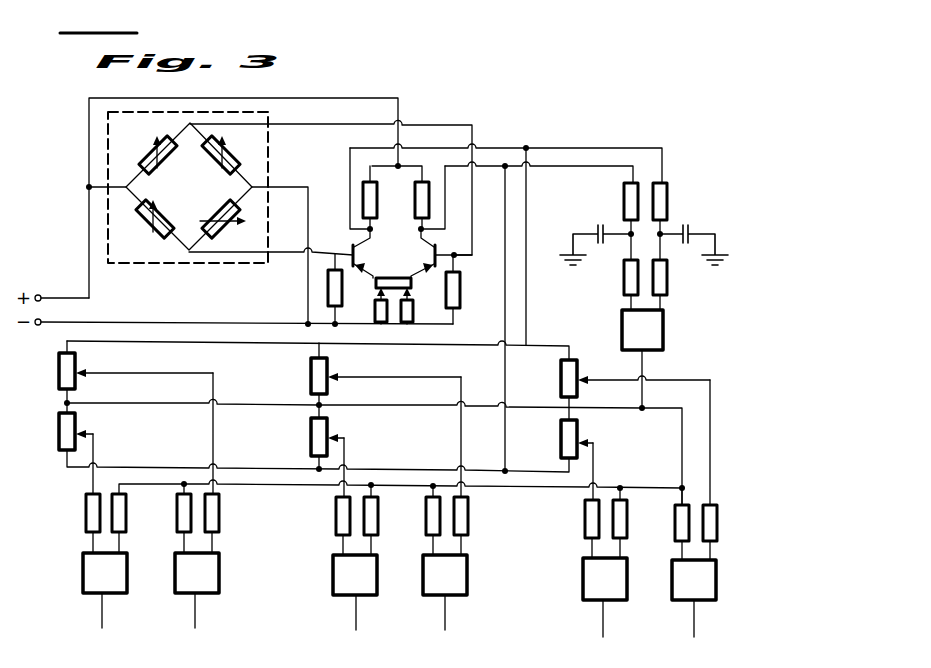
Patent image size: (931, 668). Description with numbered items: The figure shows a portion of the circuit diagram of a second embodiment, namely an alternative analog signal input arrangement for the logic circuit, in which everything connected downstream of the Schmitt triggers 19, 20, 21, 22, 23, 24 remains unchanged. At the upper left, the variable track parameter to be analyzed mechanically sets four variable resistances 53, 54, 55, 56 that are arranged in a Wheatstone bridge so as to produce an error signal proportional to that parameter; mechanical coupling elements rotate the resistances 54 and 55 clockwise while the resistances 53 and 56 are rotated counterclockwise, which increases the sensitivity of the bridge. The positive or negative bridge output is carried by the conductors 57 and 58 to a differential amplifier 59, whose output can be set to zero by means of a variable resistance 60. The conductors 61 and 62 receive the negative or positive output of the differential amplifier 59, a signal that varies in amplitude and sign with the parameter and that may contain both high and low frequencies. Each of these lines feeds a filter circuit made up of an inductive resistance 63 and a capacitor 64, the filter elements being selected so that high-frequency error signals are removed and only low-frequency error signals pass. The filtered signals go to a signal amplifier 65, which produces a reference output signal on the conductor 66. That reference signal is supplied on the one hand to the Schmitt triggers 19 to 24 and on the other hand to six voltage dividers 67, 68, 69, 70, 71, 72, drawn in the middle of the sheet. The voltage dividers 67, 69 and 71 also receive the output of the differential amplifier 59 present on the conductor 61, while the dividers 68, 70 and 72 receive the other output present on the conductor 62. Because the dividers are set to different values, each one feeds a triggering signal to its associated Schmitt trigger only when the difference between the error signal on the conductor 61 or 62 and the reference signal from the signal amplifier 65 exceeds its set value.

The Schmitt trigger 19 is at (115, 573).
The Schmitt trigger 20 is at (208, 577).
The Schmitt trigger 21 is at (367, 580).
The Schmitt trigger 22 is at (455, 580).
The Schmitt trigger 23 is at (612, 583).
The Schmitt trigger 24 is at (703, 583).
The variable resistance 53 is at (150, 216).
The variable resistance 54 is at (152, 162).
The variable resistance 55 is at (227, 160).
The variable resistance 56 is at (224, 212).
The conductor 57 is at (314, 126).
The conductor 58 is at (288, 254).
The differential amplifier 59 is at (395, 244).
The variable resistance 60 is at (405, 326).
The conductor 61 is at (490, 147).
The conductor 62 is at (490, 168).
The inductive resistance 63 is at (630, 199).
The capacitor 64 is at (597, 232).
The signal amplifier 65 is at (648, 338).
The conductor 66 is at (646, 368).
The voltage divider 67 is at (63, 366).
The voltage divider 68 is at (62, 428).
The voltage divider 69 is at (313, 364).
The voltage divider 70 is at (313, 425).
The voltage divider 71 is at (562, 367).
The voltage divider 72 is at (562, 430).